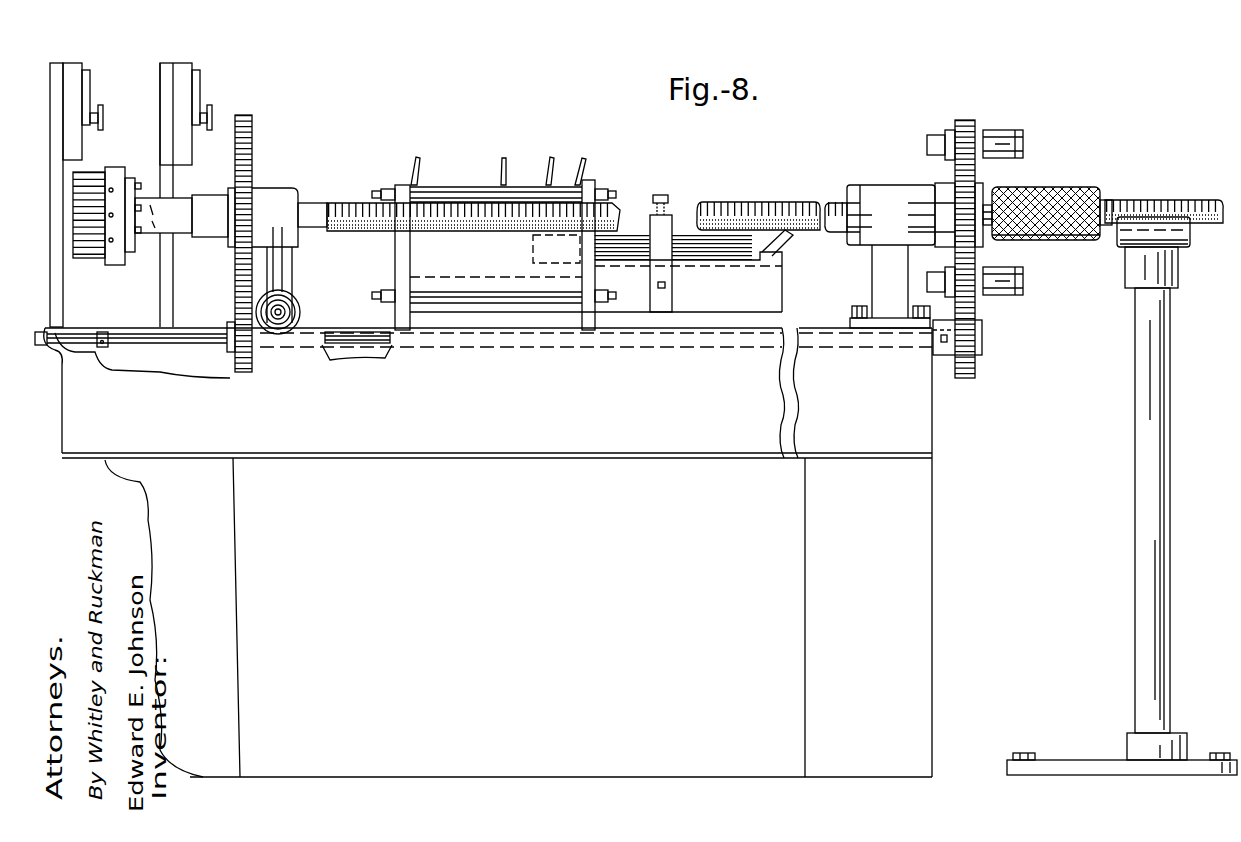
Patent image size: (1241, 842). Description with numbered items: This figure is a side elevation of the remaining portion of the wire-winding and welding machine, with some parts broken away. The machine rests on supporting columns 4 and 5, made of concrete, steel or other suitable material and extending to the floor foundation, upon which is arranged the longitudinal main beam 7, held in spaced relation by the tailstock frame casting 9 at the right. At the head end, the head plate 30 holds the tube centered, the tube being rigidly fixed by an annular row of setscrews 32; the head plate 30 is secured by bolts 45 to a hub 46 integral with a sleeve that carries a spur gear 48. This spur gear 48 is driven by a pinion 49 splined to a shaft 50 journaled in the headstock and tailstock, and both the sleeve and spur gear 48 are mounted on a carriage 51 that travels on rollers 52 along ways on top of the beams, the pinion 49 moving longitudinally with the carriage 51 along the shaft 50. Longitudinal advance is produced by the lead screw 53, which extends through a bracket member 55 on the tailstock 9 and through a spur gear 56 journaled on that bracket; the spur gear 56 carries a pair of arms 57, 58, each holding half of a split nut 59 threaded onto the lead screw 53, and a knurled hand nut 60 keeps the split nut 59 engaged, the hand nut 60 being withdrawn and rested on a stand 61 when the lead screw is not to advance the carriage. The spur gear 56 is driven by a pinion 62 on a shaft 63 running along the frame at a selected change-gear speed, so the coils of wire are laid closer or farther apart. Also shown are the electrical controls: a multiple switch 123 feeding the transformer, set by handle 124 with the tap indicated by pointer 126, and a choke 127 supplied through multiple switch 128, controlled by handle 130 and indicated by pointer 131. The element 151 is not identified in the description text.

The multiple switch 123 is at (70, 64).
The pointer 126 is at (91, 92).
The handle 124 is at (103, 106).
The multiple switch 128 is at (184, 68).
The pointer 131 is at (203, 95).
The handle 130 is at (212, 104).
The head plate 30 is at (110, 169).
The setscrews 32 is at (111, 188).
The bolts 45 is at (134, 241).
The hub 46 is at (127, 256).
The spur gear 48 is at (252, 131).
The carriage 51 is at (282, 188).
The rollers 52 is at (301, 312).
The pinion 49 is at (248, 380).
The shaft 50 is at (41, 348).
The shaft 63 is at (98, 349).
The lead screw 53 is at (343, 203).
The choke 127 is at (459, 183).
The tailstock frame casting 9 is at (878, 272).
The bracket member 55 is at (878, 190).
The spur gear 56 is at (963, 120).
The pinion 62 is at (968, 379).
The arm 57 is at (984, 238).
The arm 58 is at (976, 258).
The split nut 59 is at (985, 193).
The knurled hand nut 60 is at (1084, 187).
The stand 61 is at (1114, 248).
The table 151 is at (512, 458).
The main beam 7 is at (757, 438).
The column 4 is at (237, 590).
The column 5 is at (806, 580).